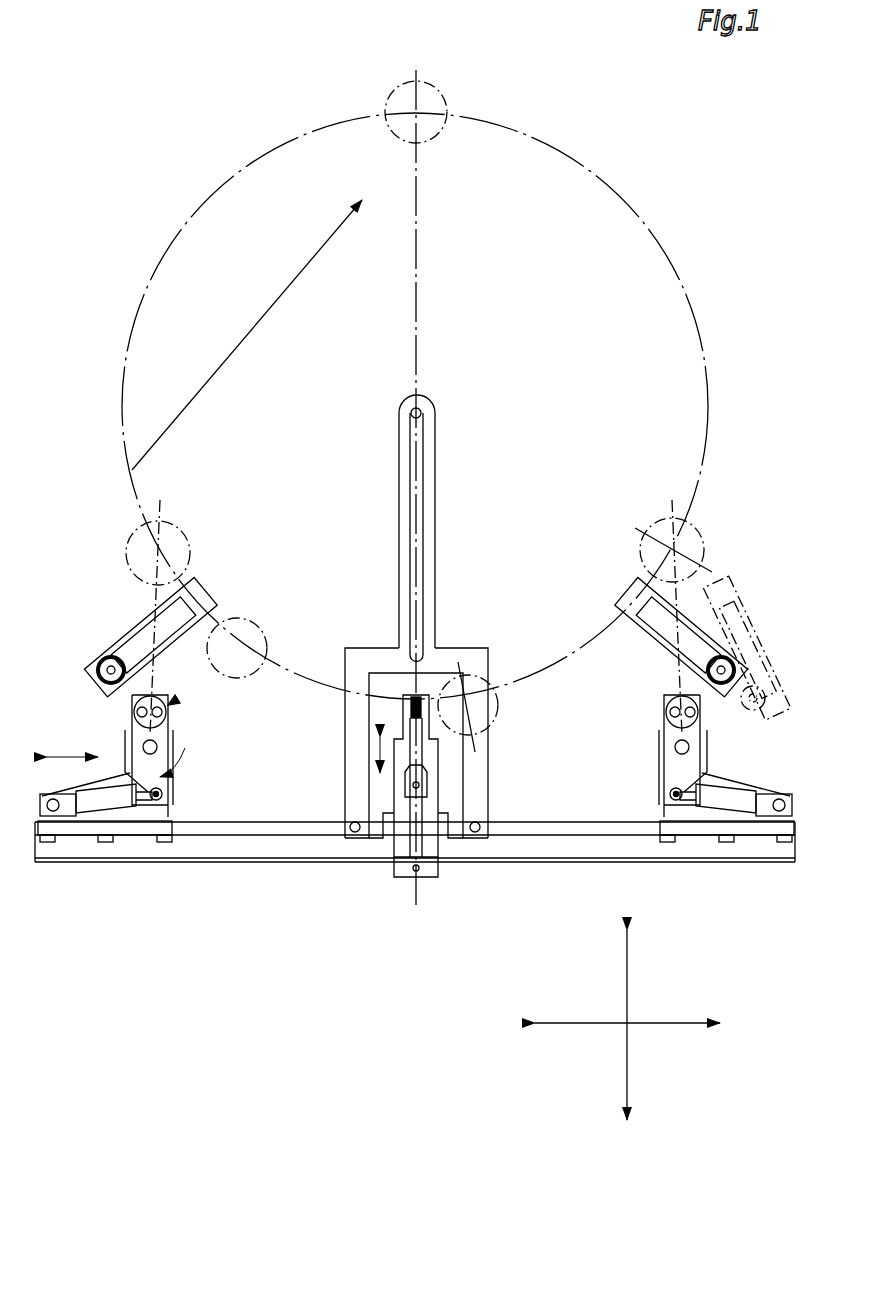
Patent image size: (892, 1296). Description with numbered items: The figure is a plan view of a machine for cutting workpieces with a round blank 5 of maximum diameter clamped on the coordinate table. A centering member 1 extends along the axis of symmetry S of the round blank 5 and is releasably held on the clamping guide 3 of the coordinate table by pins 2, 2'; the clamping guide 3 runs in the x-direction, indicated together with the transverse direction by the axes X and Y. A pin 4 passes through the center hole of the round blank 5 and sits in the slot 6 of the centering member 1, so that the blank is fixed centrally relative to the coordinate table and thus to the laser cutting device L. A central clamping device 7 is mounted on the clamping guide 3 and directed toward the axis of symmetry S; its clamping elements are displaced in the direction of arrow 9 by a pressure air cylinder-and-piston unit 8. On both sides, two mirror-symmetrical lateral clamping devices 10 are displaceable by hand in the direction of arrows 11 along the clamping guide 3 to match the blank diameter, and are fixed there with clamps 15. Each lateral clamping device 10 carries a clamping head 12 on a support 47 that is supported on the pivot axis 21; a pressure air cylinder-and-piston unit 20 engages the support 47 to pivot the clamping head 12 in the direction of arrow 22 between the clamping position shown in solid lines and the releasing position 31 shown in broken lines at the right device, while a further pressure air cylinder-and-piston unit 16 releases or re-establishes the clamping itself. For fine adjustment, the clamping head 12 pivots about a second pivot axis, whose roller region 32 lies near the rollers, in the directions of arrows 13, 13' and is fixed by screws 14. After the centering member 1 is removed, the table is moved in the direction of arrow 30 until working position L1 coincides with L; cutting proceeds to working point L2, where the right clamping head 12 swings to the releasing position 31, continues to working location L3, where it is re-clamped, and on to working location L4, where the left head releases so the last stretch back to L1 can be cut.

The centering member 1 is at (403, 398).
The pin 2 is at (350, 803).
The pin 2' is at (468, 803).
The clamping guide 3 is at (210, 850).
The pin 4 is at (419, 408).
The round blank 5 is at (552, 160).
The slot 6 is at (416, 440).
The central clamping device 7 is at (428, 860).
The pressure air cylinder-and-piston unit 8 is at (412, 840).
The arrow 9 is at (378, 752).
The lateral clamping device 10 is at (145, 838).
The arrows 11 is at (73, 753).
The clamping head 12 is at (140, 623).
The arrow 13 is at (74, 689).
The arrow 13' is at (207, 699).
The screws 14 is at (137, 713).
The clamps 15 is at (44, 838).
The pressure air cylinder-and-piston unit 16 is at (112, 665).
The pressure air cylinder-and-piston unit 20 is at (88, 815).
The pivot axis 21 is at (158, 747).
The arrow 22 is at (183, 762).
The arrow 30 is at (266, 327).
The releasing position 31 is at (743, 633).
The roller 32 is at (168, 697).
The support 47 is at (140, 770).
The axis of symmetry S is at (416, 253).
The laser cutting device L is at (427, 90).
The working position L1 is at (123, 572).
The working point L2 is at (690, 543).
The working location L3 is at (497, 712).
The working location L4 is at (212, 677).
The x-direction X is at (627, 1025).
The Y axis Y is at (628, 1019).